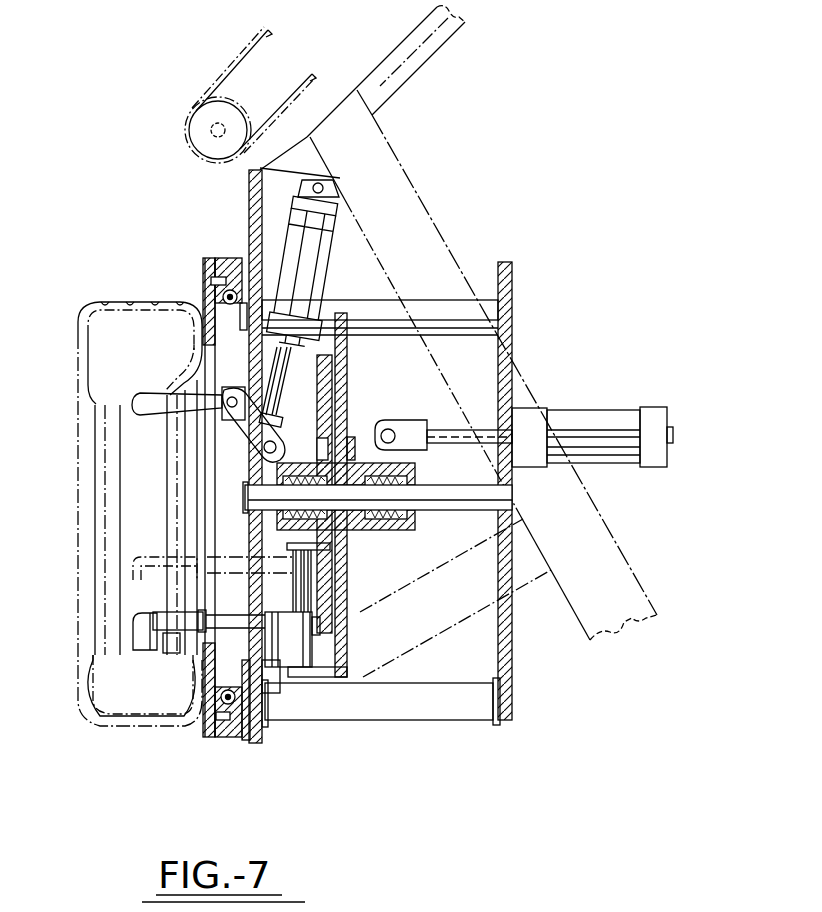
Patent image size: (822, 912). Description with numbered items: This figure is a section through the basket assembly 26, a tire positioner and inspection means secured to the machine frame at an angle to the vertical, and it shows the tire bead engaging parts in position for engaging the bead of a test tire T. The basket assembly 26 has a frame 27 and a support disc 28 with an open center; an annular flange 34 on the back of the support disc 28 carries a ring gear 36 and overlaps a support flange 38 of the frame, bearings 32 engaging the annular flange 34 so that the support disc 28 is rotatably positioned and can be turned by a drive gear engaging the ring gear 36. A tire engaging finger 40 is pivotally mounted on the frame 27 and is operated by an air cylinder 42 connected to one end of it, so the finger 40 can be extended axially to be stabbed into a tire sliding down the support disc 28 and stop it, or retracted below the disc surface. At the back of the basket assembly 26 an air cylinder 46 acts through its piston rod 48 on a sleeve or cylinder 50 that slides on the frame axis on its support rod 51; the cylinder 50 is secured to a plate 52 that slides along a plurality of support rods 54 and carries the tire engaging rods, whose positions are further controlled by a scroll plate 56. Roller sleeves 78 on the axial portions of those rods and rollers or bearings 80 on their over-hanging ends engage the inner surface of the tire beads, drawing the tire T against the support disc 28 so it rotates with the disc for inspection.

The basket assembly 26 is at (193, 266).
The frame 27 is at (249, 193).
The support disc 28 is at (207, 727).
The bearings 32 is at (262, 741).
The annular flange 34 is at (230, 738).
The ring gear 36 is at (232, 257).
The support flange 38 is at (250, 692).
The tire engaging finger 40 is at (143, 398).
The air cylinder 42 is at (328, 272).
The air cylinder 46 is at (586, 412).
The piston rod 48 is at (448, 430).
The sleeve or cylinder 50 is at (382, 530).
The support rod 51 is at (458, 503).
The plate 52 is at (345, 578).
The support rods 54 is at (393, 337).
The scroll plate 56 is at (327, 625).
The roller sleeves 78 is at (160, 612).
The rollers or bearings 80 is at (137, 634).
The test tire T is at (113, 727).